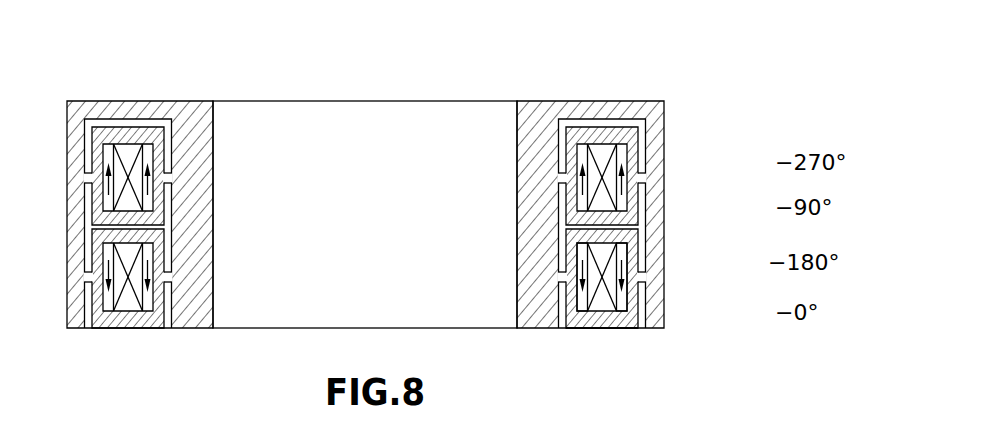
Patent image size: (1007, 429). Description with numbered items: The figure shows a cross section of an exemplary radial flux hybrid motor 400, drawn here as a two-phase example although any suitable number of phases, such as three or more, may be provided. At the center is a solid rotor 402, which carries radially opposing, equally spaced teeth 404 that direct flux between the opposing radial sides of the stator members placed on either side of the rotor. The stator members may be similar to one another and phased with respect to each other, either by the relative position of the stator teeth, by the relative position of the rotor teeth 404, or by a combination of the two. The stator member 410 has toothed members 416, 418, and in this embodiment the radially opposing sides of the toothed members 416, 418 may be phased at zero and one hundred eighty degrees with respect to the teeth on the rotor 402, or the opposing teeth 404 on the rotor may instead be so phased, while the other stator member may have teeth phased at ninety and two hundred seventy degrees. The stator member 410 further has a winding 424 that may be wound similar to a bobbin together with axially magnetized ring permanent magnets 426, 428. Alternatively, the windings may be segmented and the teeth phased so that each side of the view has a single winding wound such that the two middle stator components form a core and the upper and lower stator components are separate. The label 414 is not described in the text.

The radial flux hybrid motor 400 is at (430, 31).
The solid rotor 402 is at (449, 96).
The teeth 404 is at (85, 328).
The stator member 410 is at (680, 298).
The stator body 414 is at (680, 144).
The toothed member 416 is at (601, 326).
The toothed member 418 is at (618, 242).
The winding 424 is at (612, 212).
The axially magnetized ring permanent magnet 426 is at (582, 303).
The axially magnetized ring permanent magnet 428 is at (625, 300).